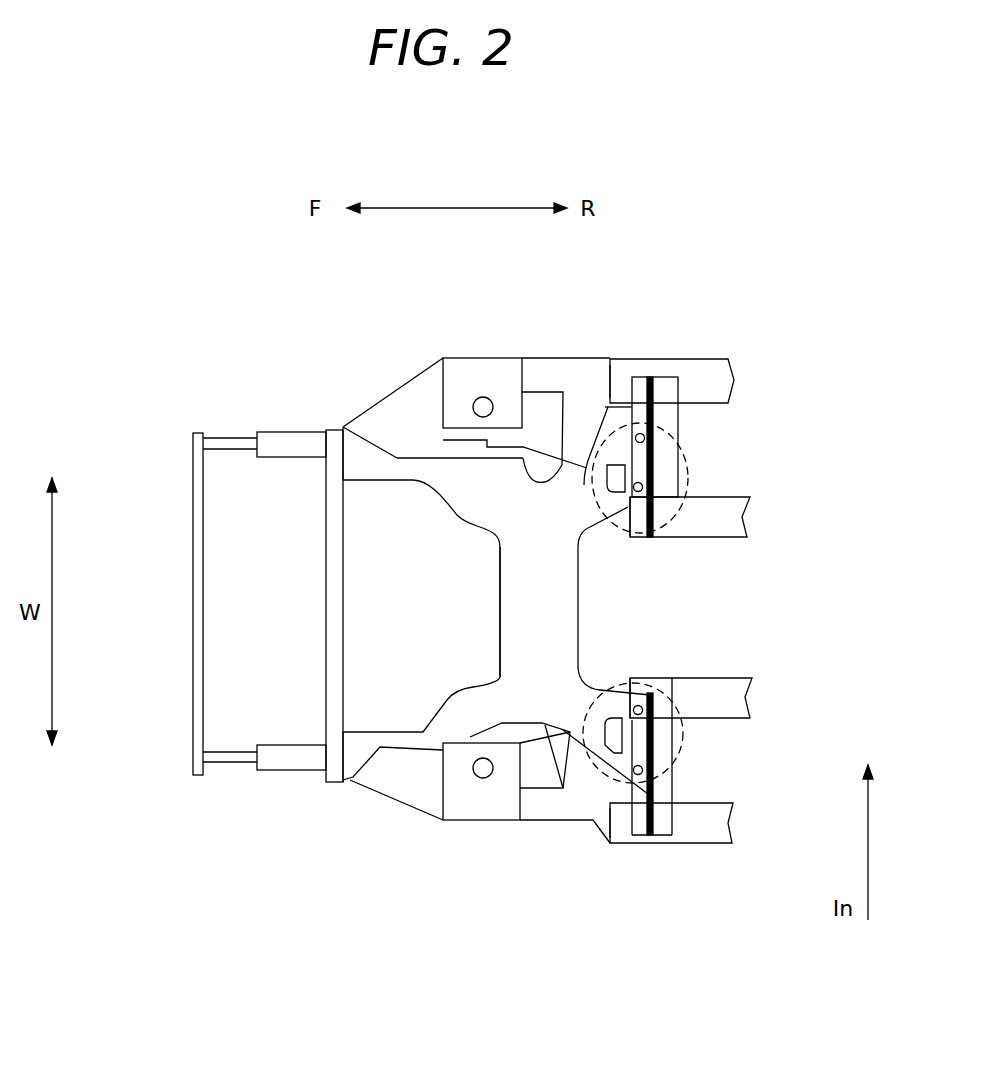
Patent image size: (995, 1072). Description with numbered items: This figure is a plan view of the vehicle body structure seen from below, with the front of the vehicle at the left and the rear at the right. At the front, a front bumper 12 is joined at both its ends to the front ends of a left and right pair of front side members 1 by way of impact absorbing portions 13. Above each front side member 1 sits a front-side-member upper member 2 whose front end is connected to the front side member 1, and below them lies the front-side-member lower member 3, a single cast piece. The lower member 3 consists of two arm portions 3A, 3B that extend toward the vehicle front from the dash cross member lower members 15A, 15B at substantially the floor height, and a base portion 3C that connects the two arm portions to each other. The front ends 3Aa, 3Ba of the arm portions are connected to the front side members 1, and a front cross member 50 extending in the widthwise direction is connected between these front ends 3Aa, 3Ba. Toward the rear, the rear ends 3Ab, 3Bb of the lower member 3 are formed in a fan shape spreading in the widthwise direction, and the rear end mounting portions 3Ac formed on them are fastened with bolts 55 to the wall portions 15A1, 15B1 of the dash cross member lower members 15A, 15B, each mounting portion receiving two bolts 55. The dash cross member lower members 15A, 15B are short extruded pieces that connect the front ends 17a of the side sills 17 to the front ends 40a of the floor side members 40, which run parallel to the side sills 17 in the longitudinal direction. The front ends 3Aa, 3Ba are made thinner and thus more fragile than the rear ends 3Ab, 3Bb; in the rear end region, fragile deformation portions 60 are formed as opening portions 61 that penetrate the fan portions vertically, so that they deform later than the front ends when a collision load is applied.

The front side member 1 is at (295, 442).
The front-side-member upper member 2 is at (545, 375).
The front-side-member lower member 3 is at (528, 558).
The arm portion 3A is at (535, 470).
The front end 3Aa is at (362, 472).
The rear end 3Ab is at (592, 520).
The rear end mounting portion 3Ac is at (580, 473).
The arm portion 3B is at (477, 743).
The front end 3Ba is at (345, 780).
The rear end 3Bb is at (587, 690).
The base portion 3C is at (557, 603).
The front bumper 12 is at (197, 600).
The impact absorbing portion 13 is at (223, 435).
The dash cross member lower member 15A is at (700, 404).
The wall portion 15A1 is at (647, 393).
The dash cross member lower member 15B is at (733, 788).
The wall portion 15B1 is at (645, 820).
The side sill 17 is at (733, 382).
The front end of side sill 17a is at (633, 375).
The floor side member 40 is at (742, 515).
The front end of floor side member 40a is at (642, 532).
The front cross member 50 is at (337, 595).
The bolt 55 is at (652, 498).
The fragile deformation portion 60 is at (743, 423).
The opening portion 61 is at (605, 410).